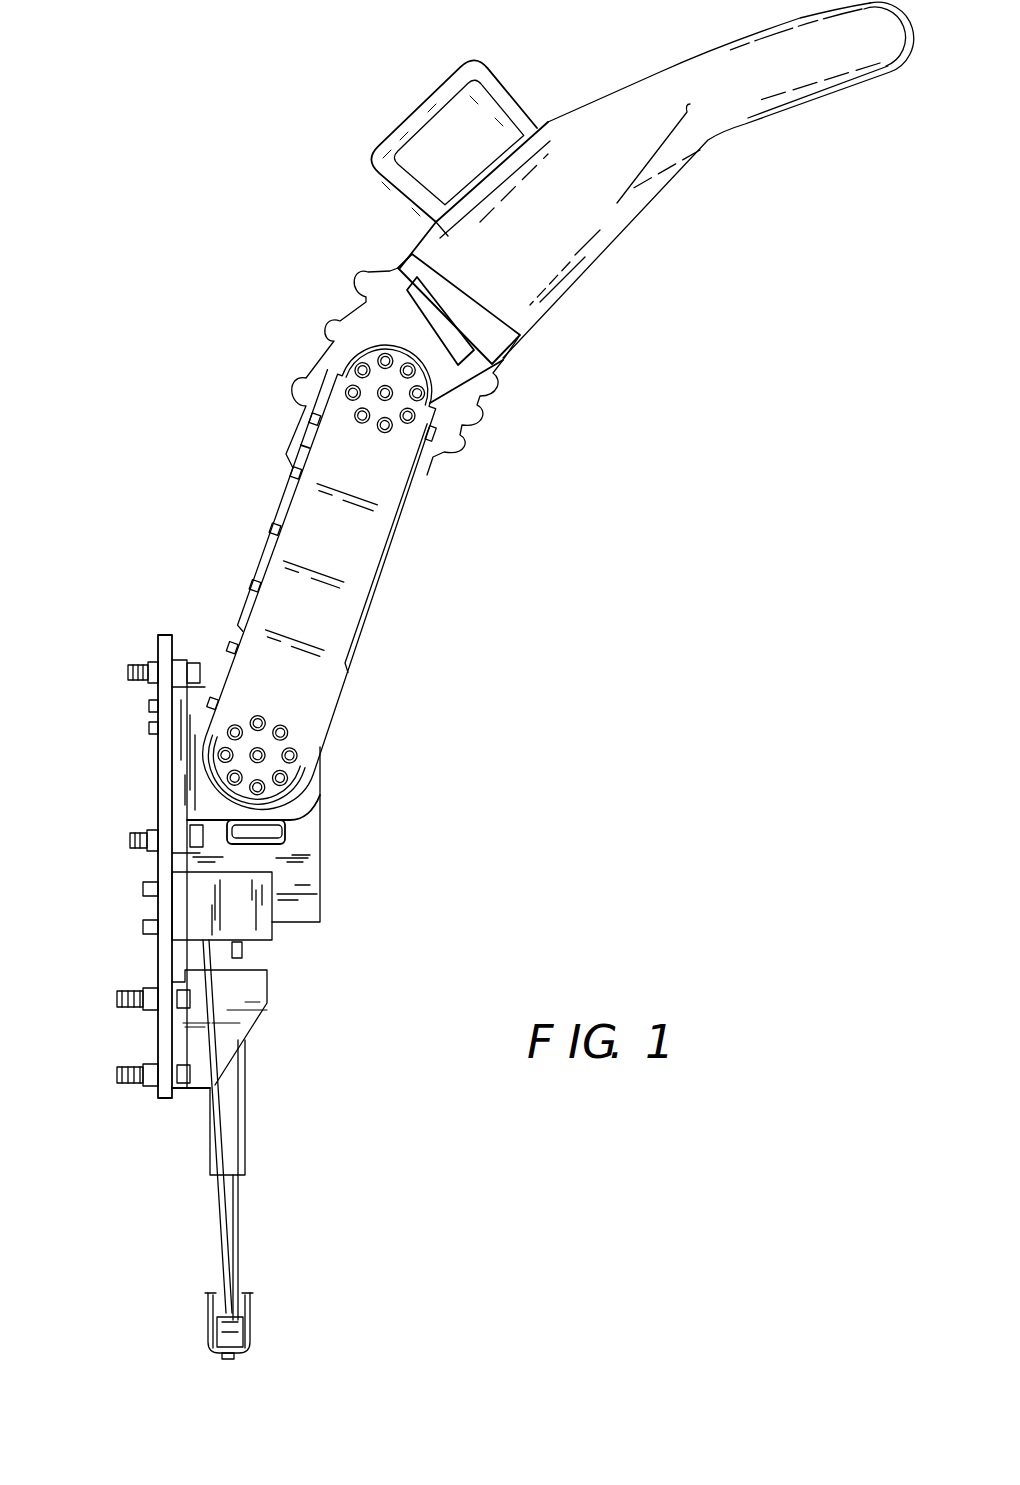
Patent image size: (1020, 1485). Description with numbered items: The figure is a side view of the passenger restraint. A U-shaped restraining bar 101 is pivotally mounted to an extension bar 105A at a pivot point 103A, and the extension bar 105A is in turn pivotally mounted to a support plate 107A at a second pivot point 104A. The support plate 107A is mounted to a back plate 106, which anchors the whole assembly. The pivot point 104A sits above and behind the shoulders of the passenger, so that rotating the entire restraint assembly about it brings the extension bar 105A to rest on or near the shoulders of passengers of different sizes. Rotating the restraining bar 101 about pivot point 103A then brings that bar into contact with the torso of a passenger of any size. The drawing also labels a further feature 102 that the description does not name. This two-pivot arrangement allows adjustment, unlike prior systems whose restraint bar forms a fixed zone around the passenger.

The U-shaped restraining bar 101 is at (737, 124).
The hand loop 102 is at (393, 125).
The pivot point 103A is at (372, 455).
The pivot point 104A is at (280, 708).
The extension bar 105A is at (350, 610).
The back plate 106 is at (150, 752).
The support plate 107A is at (305, 790).